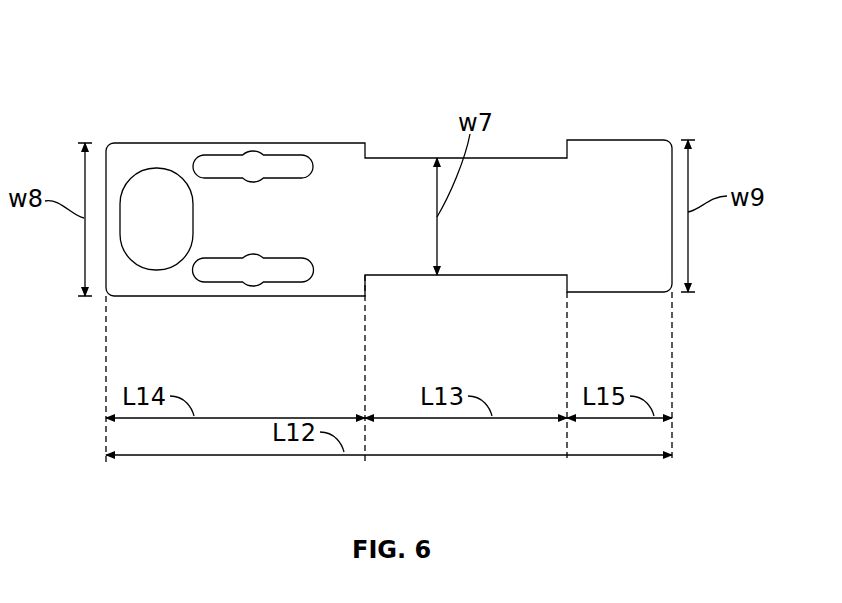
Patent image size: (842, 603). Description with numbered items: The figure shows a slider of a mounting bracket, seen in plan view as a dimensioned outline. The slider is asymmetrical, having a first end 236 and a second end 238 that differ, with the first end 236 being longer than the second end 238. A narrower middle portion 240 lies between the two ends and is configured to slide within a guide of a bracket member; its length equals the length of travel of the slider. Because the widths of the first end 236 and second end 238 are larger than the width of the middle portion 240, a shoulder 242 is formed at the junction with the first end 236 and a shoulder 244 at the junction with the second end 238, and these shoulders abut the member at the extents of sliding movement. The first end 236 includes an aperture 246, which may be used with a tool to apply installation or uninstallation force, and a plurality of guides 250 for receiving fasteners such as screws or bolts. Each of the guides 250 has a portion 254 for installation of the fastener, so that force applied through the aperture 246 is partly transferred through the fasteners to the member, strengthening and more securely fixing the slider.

The first end 236 is at (128, 152).
The second end 238 is at (645, 152).
The middle portion 240 is at (507, 185).
The shoulder 242 is at (372, 152).
The shoulder 244 is at (559, 150).
The aperture 246 is at (152, 168).
The guides 250 is at (230, 156).
The portion 254 is at (257, 154).